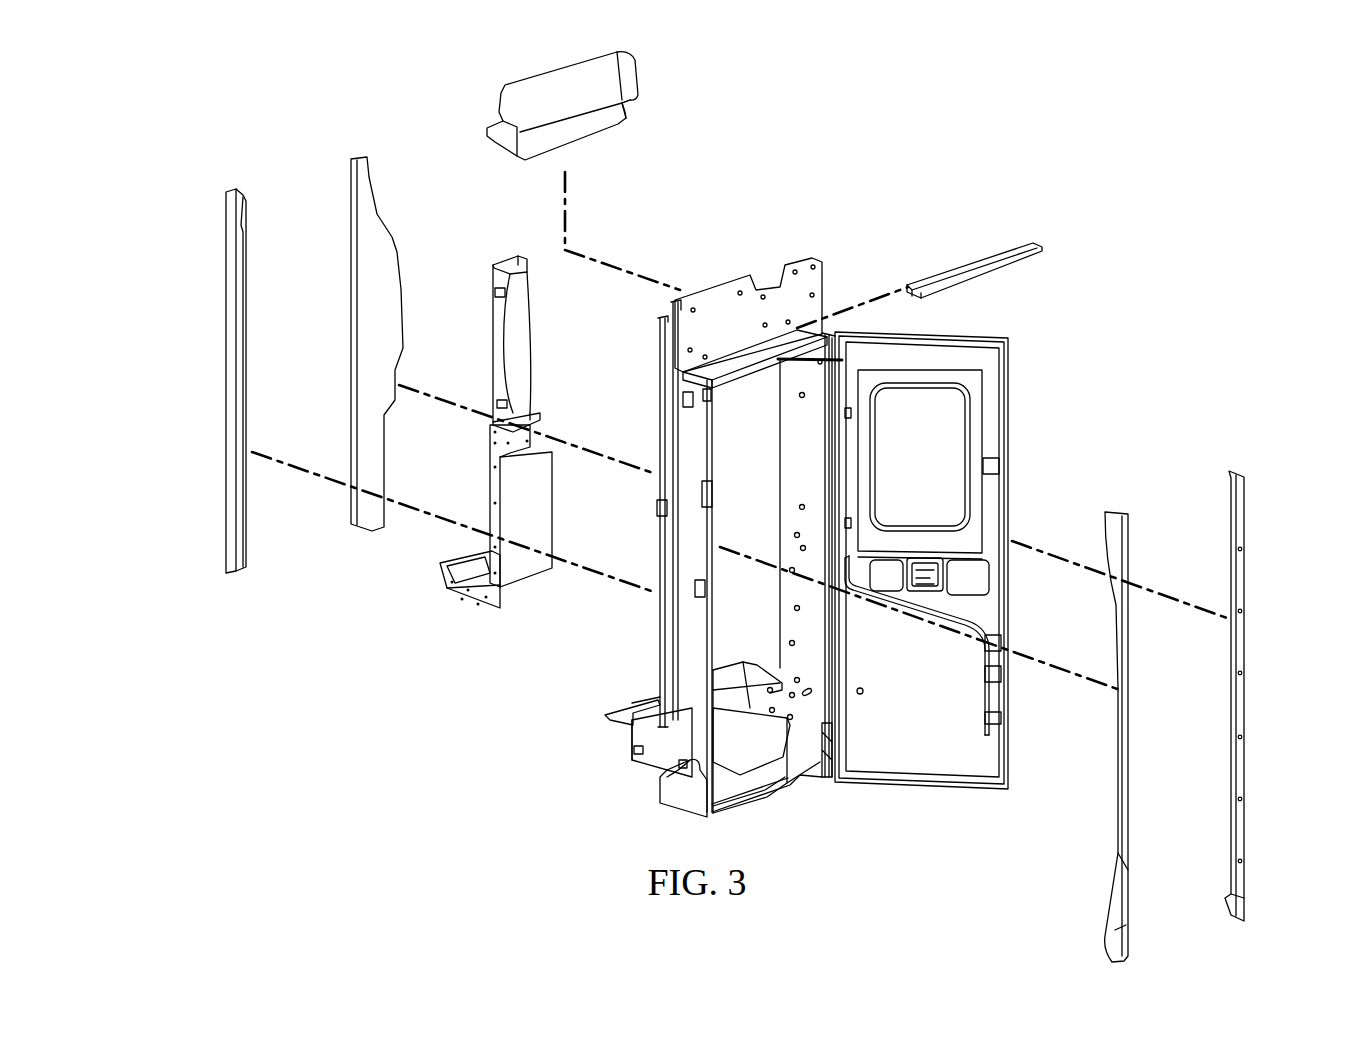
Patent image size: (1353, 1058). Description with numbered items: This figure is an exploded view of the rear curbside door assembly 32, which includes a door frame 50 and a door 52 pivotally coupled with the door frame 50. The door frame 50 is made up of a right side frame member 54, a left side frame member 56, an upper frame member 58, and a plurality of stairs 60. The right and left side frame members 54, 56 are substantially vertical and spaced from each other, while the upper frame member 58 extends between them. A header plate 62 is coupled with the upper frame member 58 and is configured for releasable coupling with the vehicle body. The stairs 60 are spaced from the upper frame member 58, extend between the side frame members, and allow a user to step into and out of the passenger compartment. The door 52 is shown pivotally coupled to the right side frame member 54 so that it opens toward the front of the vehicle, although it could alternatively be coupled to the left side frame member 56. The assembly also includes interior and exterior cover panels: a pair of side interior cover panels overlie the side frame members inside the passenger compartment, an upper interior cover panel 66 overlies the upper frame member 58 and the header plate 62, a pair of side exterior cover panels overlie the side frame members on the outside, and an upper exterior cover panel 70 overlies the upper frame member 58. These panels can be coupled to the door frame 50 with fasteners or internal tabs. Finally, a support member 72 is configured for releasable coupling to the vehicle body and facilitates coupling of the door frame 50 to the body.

The rear curbside door assembly 32 is at (1000, 116).
The door frame 50 is at (634, 382).
The door 52 is at (978, 360).
The right side frame member 54 is at (797, 364).
The left side frame member 56 is at (677, 662).
The upper frame member 58 is at (738, 368).
The stairs 60 is at (762, 766).
The header plate 62 is at (808, 283).
The upper interior cover panel 66 is at (632, 76).
The upper exterior cover panel 70 is at (975, 257).
The support member 72 is at (474, 251).